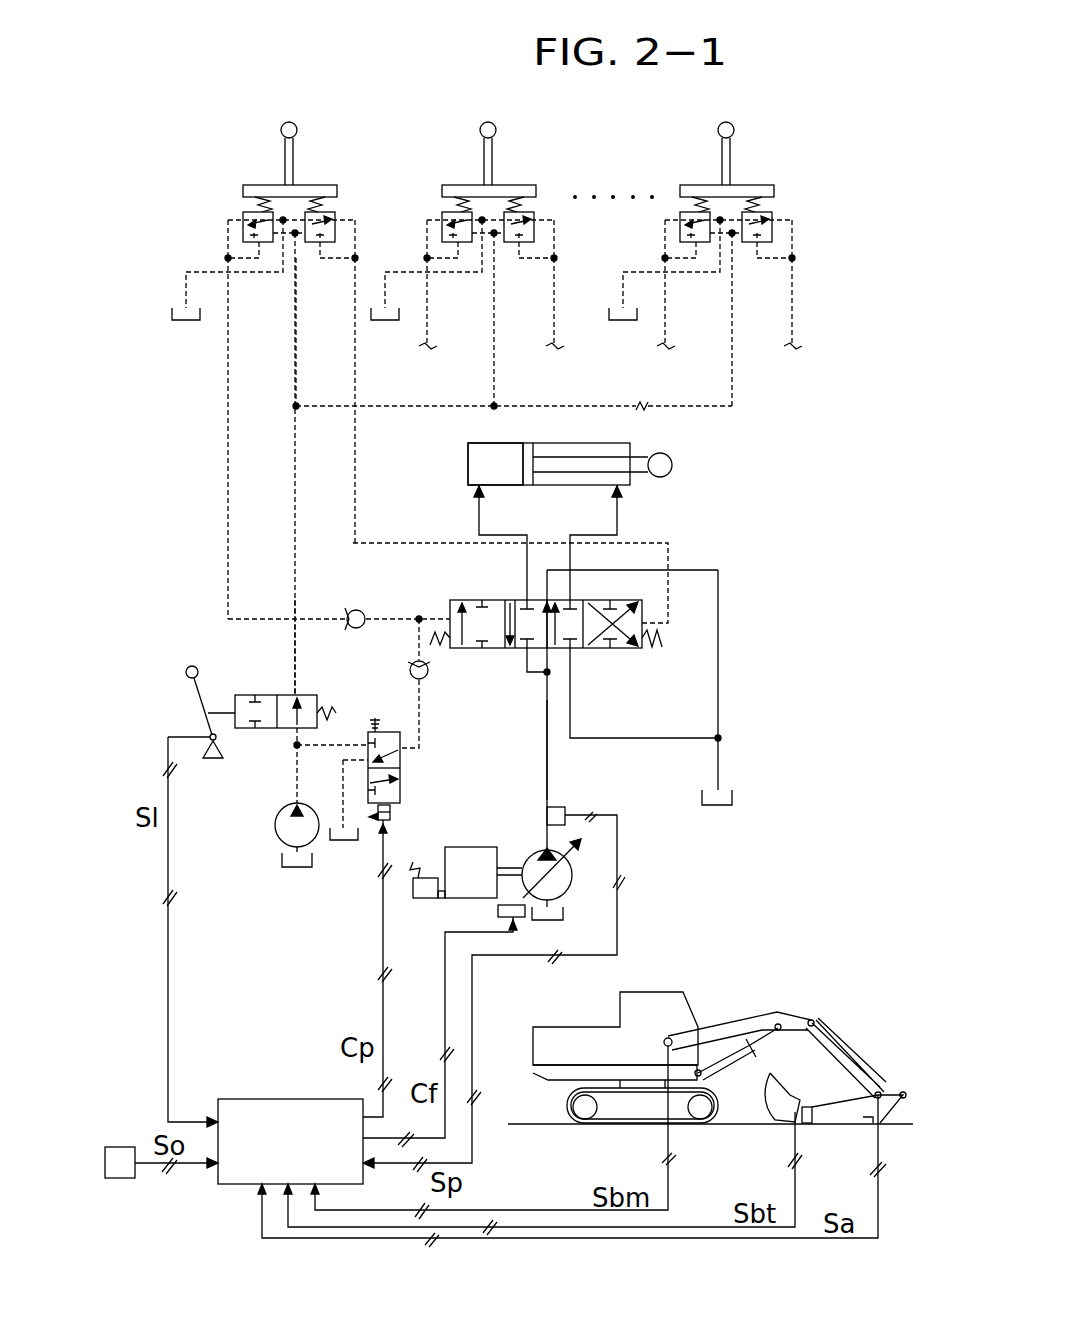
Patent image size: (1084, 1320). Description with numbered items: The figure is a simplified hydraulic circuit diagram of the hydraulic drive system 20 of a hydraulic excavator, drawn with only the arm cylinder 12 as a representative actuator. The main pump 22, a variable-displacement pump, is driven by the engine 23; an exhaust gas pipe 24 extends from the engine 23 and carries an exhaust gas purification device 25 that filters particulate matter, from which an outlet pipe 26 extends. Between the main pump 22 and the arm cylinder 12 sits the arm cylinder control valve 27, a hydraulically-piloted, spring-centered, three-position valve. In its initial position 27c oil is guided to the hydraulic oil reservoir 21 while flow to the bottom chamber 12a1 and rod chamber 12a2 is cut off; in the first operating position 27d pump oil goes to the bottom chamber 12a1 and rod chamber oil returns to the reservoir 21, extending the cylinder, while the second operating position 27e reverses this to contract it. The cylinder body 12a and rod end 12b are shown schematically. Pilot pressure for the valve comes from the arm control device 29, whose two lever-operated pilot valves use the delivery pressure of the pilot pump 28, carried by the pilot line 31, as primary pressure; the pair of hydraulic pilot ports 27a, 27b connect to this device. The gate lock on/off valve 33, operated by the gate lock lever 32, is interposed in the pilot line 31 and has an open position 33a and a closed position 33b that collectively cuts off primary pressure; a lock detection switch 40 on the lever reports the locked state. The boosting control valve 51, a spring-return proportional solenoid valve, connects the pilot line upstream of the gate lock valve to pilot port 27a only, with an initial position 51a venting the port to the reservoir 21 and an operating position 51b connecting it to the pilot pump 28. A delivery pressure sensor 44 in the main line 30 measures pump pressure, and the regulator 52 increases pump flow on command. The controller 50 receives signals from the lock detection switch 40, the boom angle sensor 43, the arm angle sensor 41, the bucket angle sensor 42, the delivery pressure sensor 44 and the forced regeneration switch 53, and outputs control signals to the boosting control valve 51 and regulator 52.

The hydraulic drive system 20 is at (365, 120).
The arm control device 29 is at (280, 127).
The arm cylinder 12 is at (628, 443).
The cylinder body 12a is at (467, 450).
The bottom chamber 12a1 is at (502, 455).
The rod chamber 12a2 is at (598, 437).
The rod end 12b is at (673, 465).
The arm cylinder control valve 27 is at (456, 600).
The hydraulic pilot port 27a is at (448, 615).
The hydraulic pilot port 27b is at (645, 625).
The initial position 27c is at (517, 650).
The first operating position 27d is at (474, 650).
The second operating position 27e is at (617, 652).
The main line 30 is at (548, 765).
The hydraulic oil reservoir 21 is at (727, 807).
The gate lock lever 32 is at (188, 668).
The lock detection switch 40 is at (210, 735).
The gate lock on/off valve 33 is at (248, 730).
The open position 33a is at (287, 693).
The closed position 33b is at (245, 693).
The pilot line 31 is at (298, 655).
The pilot pump 28 is at (272, 832).
The boosting control valve 51 is at (370, 727).
The initial position 51a is at (400, 757).
The operating position 51b is at (402, 787).
The outlet pipe 26 is at (413, 862).
The exhaust gas purification device 25 is at (428, 898).
The exhaust gas pipe 24 is at (440, 898).
The engine 23 is at (477, 847).
The main pump 22 is at (532, 850).
The regulator 52 is at (520, 918).
The delivery pressure sensor 44 is at (567, 805).
The controller 50 is at (265, 1098).
The forced regeneration switch 53 is at (118, 1145).
The boom angle sensor 43 is at (668, 1042).
The bucket angle sensor 42 is at (793, 1112).
The arm angle sensor 41 is at (880, 1092).